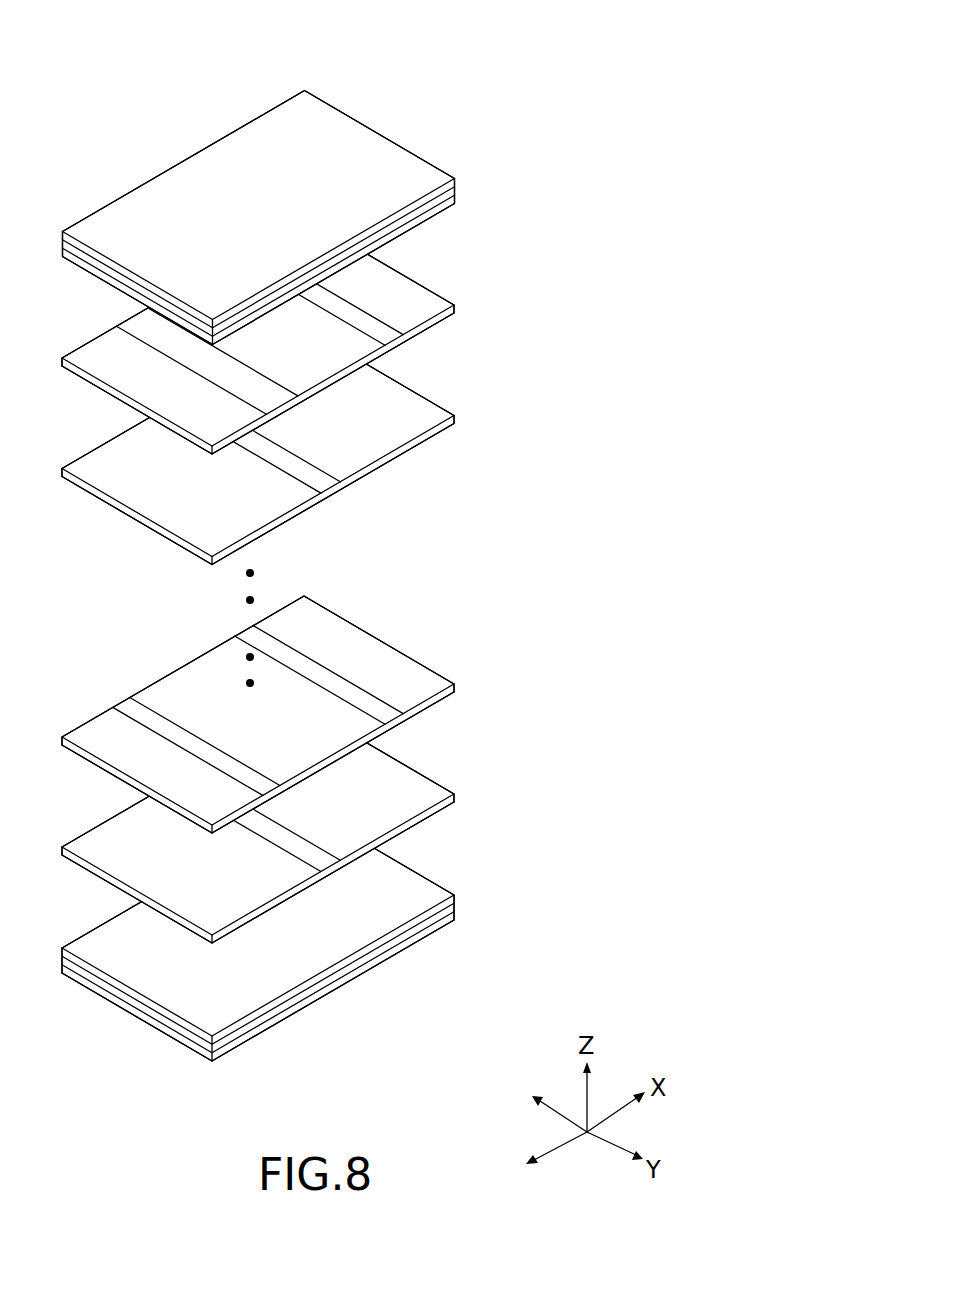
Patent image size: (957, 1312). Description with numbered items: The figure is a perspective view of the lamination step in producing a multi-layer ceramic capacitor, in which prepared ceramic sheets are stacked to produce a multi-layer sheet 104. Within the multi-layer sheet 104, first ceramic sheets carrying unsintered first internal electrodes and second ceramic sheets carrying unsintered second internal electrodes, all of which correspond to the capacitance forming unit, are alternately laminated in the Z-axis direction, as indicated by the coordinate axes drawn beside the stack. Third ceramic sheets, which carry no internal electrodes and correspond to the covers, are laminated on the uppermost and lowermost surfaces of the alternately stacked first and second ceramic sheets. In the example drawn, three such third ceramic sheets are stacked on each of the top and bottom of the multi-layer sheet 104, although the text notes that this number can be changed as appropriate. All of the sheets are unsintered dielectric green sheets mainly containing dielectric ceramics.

The multi-layer sheet 104 is at (310, 546).